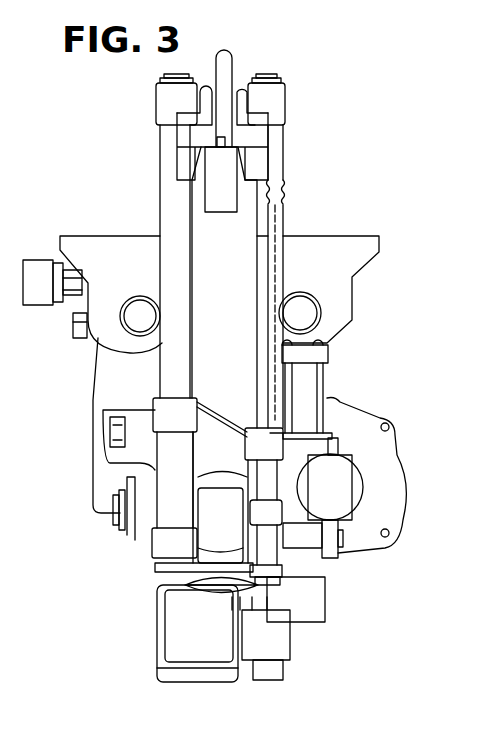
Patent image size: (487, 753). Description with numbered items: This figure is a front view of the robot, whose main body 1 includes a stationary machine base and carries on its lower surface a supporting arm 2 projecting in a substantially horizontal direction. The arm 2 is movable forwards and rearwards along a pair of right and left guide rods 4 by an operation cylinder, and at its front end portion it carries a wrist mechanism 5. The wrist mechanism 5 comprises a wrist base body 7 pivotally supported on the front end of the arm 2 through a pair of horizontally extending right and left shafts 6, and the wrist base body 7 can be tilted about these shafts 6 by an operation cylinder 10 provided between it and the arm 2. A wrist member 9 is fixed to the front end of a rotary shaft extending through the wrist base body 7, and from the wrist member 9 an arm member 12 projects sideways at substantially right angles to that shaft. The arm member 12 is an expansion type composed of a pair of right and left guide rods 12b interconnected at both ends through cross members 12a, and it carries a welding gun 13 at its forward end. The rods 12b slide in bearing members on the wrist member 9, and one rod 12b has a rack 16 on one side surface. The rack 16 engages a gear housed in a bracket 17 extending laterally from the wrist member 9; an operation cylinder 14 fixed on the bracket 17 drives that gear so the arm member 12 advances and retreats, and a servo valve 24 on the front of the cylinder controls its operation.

The main body 1 is at (97, 236).
The supporting arm 2 is at (127, 518).
The guide rods 4 is at (136, 305).
The wrist mechanism 5 is at (99, 421).
The shafts 6 is at (118, 505).
The wrist base body 7 is at (213, 470).
The wrist member 9 is at (146, 562).
The operation cylinder 10 is at (103, 445).
The arm member 12 is at (291, 141).
The cross members 12a is at (165, 106).
The guide rods 12b is at (172, 196).
The welding gun 13 is at (228, 66).
The operation cylinder 14 is at (318, 382).
The rack 16 is at (284, 204).
The bracket 17 is at (398, 455).
The servo valve 24 is at (317, 567).